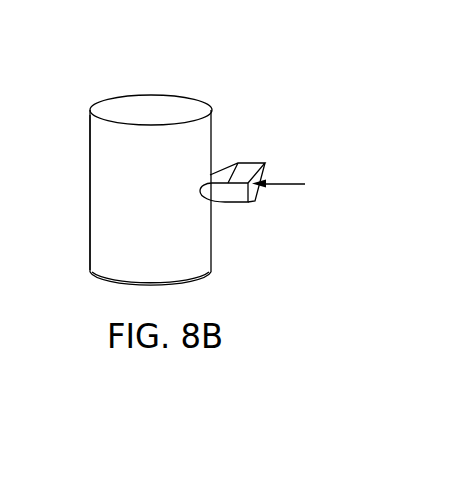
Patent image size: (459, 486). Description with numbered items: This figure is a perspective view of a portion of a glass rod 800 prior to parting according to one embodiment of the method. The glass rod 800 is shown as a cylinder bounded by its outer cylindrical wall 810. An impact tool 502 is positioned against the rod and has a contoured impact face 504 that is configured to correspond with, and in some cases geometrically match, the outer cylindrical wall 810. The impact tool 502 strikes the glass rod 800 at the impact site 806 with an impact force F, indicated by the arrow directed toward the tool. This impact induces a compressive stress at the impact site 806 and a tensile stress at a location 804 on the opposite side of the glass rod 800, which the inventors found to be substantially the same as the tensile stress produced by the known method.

The glass rod 800 is at (210, 110).
The location opposite the impact site 804 is at (90, 203).
The outer cylindrical wall 810 is at (90, 258).
The impact site 806 is at (212, 174).
The contoured impact face 504 is at (202, 190).
The impact tool 502 is at (243, 203).
The impact force F is at (286, 186).